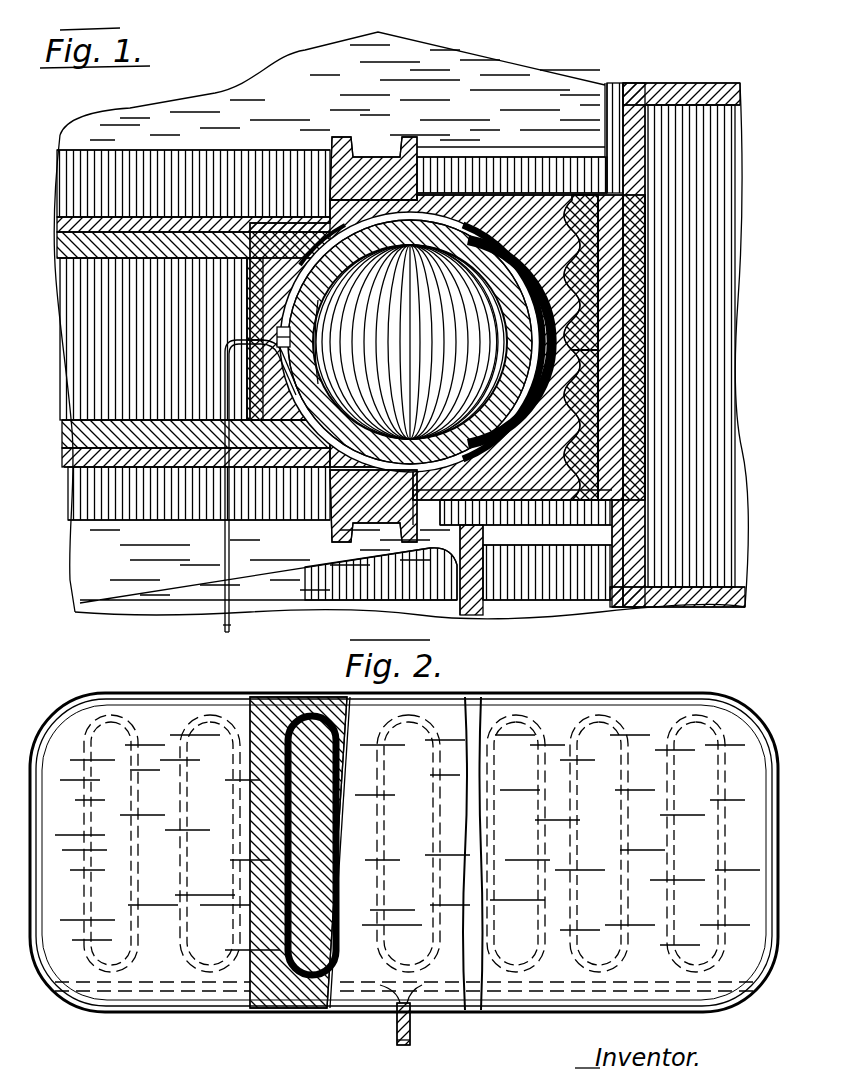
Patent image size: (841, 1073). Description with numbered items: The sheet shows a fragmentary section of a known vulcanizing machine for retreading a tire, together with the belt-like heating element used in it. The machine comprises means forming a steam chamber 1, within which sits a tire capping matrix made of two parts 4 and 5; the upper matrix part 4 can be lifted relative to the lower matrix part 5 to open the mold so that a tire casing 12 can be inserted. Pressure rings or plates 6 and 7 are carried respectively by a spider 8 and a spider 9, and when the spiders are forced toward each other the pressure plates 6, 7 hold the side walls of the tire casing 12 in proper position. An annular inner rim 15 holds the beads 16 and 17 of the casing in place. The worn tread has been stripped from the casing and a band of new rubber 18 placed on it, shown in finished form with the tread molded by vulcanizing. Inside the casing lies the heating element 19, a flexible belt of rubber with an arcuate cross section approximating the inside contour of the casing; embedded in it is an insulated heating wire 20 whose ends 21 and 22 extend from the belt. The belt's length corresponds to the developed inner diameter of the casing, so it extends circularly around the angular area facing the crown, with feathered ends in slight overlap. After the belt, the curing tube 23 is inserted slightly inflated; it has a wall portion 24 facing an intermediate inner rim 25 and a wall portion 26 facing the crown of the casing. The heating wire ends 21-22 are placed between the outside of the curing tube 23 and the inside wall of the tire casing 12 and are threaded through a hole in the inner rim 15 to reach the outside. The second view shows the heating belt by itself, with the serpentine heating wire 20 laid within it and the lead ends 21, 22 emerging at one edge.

In FIG. 1, the steam chamber 1 is at (727, 206).
In FIG. 1, the matrix part 4 is at (618, 294).
In FIG. 1, the matrix part 5 is at (608, 440).
In FIG. 1, the pressure plate 6 is at (350, 150).
In FIG. 1, the pressure plate 7 is at (304, 515).
In FIG. 1, the spider 8 is at (478, 68).
In FIG. 1, the spider 9 is at (90, 592).
In FIG. 1, the tire casing 12 is at (425, 203).
In FIG. 1, the annular inner rim 15 is at (130, 362).
In FIG. 1, the bead 16 is at (255, 285).
In FIG. 1, the bead 17 is at (252, 395).
In FIG. 1, the band of new rubber 18 is at (592, 250).
In FIG. 1, the heating element 19 is at (600, 358).
In FIG. 2, the heating element 19 is at (484, 700).
In FIG. 1, the heating wire 20 is at (518, 360).
In FIG. 2, the heating wire 20 is at (184, 862).
In FIG. 1, the end of heating wire 21 is at (227, 632).
In FIG. 2, the end of heating wire 21 is at (403, 1045).
In FIG. 1, the end of heating wire 22 is at (227, 632).
In FIG. 2, the end of heating wire 22 is at (403, 1045).
In FIG. 1, the ends of heating wire 21-22 is at (222, 485).
In FIG. 1, the curing tube 23 is at (398, 236).
In FIG. 1, the wall portion 24 is at (318, 324).
In FIG. 1, the intermediate inner rim 25 is at (276, 320).
In FIG. 1, the wall portion 26 is at (505, 330).